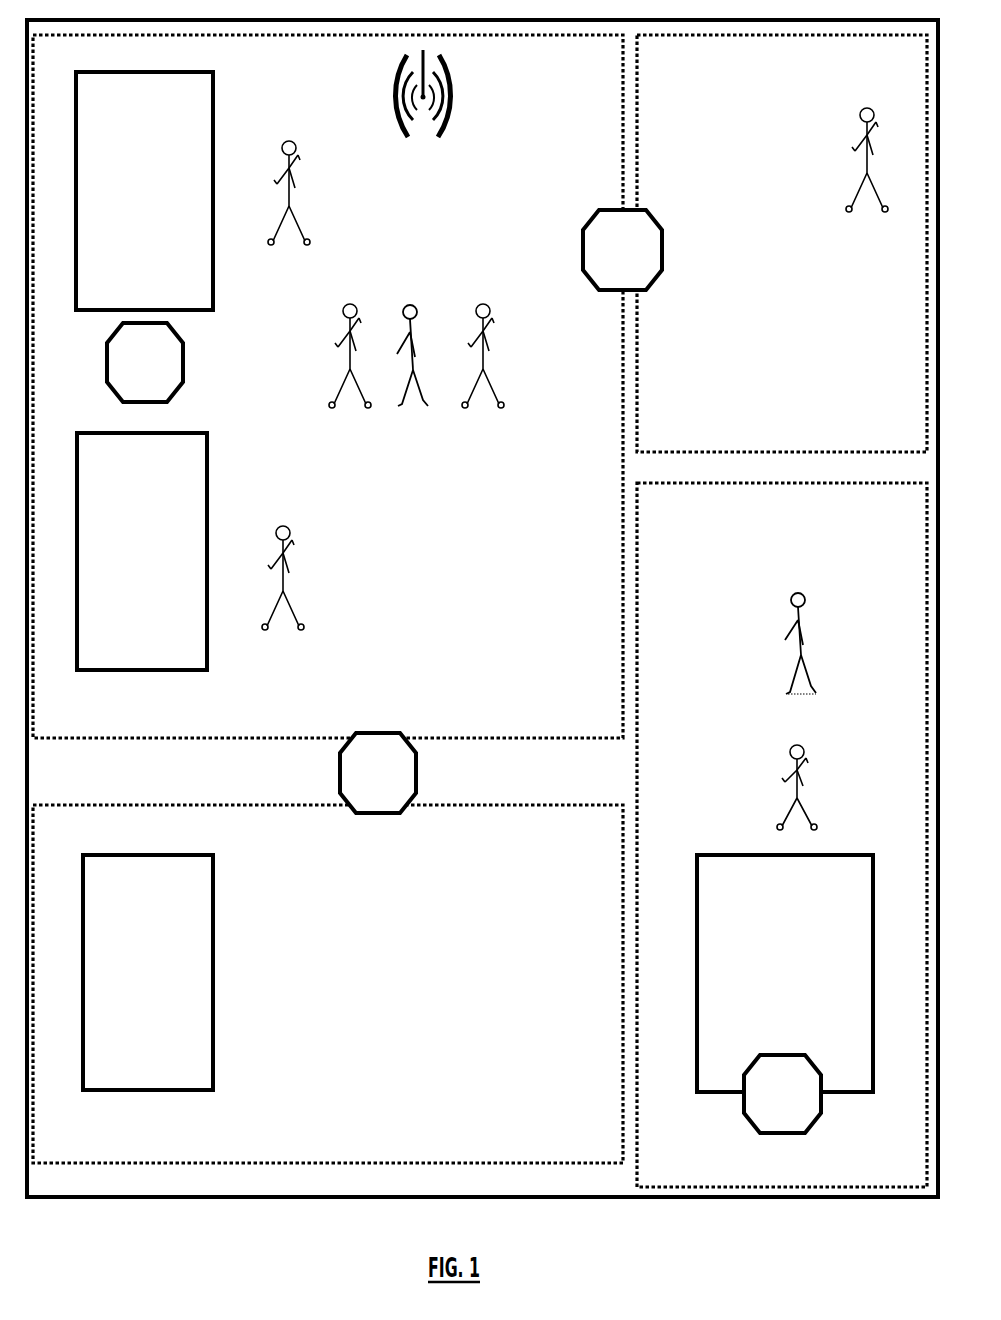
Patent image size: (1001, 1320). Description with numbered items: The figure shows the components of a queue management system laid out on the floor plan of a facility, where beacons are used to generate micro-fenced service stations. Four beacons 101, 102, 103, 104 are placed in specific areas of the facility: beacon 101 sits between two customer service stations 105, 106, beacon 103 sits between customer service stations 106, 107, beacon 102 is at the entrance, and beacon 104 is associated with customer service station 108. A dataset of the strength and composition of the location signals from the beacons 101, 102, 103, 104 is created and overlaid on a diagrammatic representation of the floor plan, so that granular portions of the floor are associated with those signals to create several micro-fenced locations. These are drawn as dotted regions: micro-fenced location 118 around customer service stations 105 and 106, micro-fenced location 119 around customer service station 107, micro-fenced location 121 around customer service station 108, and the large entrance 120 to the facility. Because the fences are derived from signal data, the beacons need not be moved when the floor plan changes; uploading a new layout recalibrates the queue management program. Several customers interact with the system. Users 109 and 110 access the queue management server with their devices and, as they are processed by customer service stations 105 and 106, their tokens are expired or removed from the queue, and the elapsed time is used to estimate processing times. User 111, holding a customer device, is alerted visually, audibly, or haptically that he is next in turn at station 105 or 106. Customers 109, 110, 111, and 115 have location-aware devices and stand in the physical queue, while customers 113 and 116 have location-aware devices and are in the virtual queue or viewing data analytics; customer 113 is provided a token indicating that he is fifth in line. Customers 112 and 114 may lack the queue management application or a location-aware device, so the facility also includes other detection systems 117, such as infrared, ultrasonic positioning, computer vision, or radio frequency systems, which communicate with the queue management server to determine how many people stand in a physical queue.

The beacon 101 is at (145, 362).
The beacon 102 is at (622, 250).
The beacon 103 is at (378, 773).
The beacon 104 is at (782, 1094).
The customer service station 105 is at (144, 191).
The customer service station 106 is at (142, 551).
The customer service station 107 is at (148, 972).
The customer service station 108 is at (785, 973).
The user 109 is at (289, 176).
The user 110 is at (283, 560).
The user 111 is at (350, 339).
The customer 112 is at (412, 338).
The customer 113 is at (483, 339).
The customer 114 is at (800, 623).
The customer 115 is at (797, 772).
The customer 116 is at (867, 142).
The detection system 117 is at (422, 107).
The micro-fenced location 118 is at (328, 386).
The micro-fenced location 119 is at (328, 984).
The entrance 120 is at (782, 243).
The micro-fenced location 121 is at (782, 835).